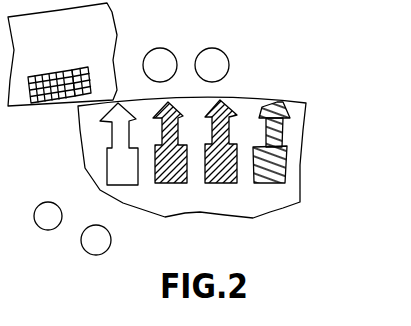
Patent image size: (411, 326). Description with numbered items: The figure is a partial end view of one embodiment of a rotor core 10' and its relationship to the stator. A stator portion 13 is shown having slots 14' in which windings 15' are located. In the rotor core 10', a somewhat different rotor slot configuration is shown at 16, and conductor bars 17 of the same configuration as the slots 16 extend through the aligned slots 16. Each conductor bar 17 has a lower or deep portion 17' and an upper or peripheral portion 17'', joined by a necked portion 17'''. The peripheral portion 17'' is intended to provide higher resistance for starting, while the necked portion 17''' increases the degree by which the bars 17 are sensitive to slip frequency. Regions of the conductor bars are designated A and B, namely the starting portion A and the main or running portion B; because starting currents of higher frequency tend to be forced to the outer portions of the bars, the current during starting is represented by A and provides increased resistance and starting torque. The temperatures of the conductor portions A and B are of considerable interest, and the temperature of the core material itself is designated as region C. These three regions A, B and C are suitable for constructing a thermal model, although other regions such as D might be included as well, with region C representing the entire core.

The second printing plate / substrate body 10' is at (213, 161).
The stator portion 13 is at (84, 53).
The slots 14' is at (51, 67).
The windings 15' is at (87, 63).
The rotor slot 16 is at (107, 158).
The conductor bars 17 is at (257, 149).
The lower or deep portion 17' is at (300, 164).
The upper or peripheral portion 17'' is at (292, 89).
The necked portion 17''' is at (313, 132).
The starting portion A is at (160, 75).
The main portion or running portion B is at (98, 203).
The core region C is at (120, 231).
The additional region D is at (212, 75).